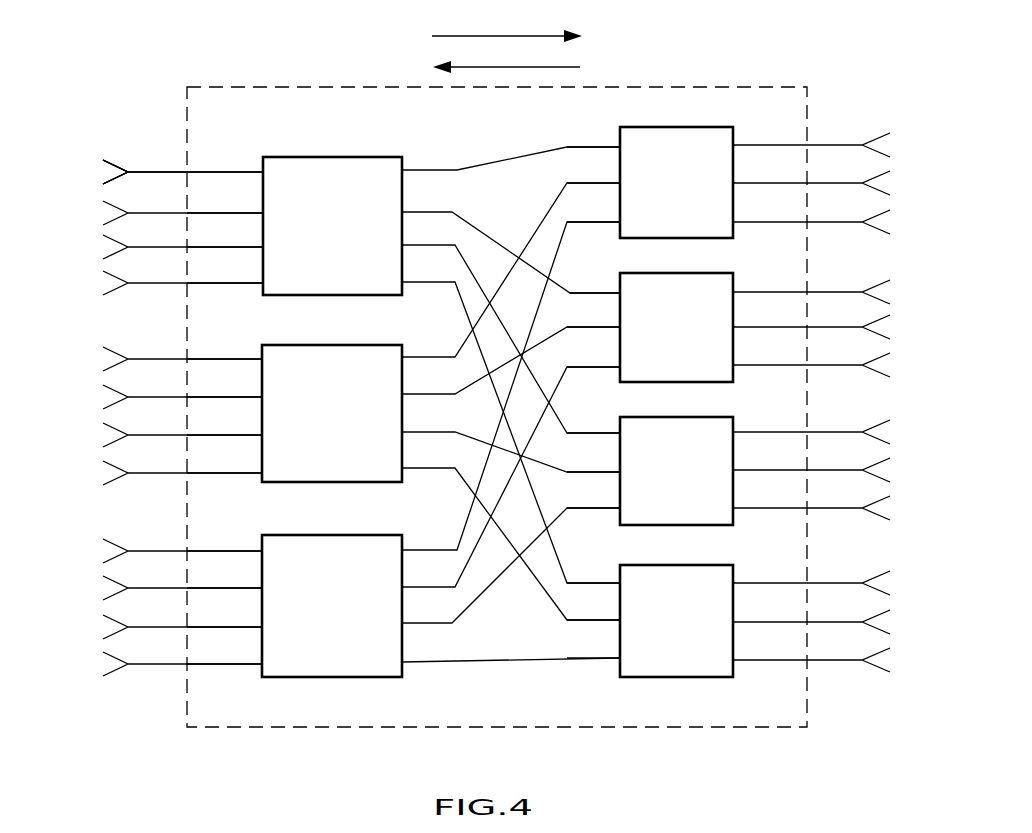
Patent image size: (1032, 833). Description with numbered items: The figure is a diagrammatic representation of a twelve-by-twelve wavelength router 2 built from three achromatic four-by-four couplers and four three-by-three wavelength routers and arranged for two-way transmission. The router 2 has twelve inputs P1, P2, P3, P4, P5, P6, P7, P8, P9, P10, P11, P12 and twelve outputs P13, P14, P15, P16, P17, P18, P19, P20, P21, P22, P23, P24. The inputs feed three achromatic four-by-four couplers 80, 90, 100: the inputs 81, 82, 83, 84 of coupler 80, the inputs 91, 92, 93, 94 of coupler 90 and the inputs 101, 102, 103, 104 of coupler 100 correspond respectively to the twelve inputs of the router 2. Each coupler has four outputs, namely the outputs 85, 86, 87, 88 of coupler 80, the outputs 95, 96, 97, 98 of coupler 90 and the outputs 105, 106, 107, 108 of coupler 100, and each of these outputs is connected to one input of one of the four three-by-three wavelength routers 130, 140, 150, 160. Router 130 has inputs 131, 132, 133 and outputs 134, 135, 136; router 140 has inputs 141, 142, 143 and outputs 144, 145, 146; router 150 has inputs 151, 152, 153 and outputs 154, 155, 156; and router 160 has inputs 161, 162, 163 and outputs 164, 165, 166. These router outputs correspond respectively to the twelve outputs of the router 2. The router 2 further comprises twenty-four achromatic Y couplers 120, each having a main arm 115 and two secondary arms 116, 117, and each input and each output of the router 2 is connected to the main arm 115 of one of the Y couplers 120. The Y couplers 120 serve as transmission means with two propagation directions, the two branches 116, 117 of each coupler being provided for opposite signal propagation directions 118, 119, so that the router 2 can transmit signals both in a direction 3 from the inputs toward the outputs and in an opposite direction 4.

The wavelength router 2 is at (670, 86).
The direction 3 is at (485, 32).
The opposite direction 4 is at (553, 64).
The achromatic 4×4 coupler 80 is at (297, 157).
The input of coupler 80 81 is at (236, 168).
The input of coupler 80 82 is at (236, 209).
The input of coupler 80 83 is at (236, 243).
The input of coupler 80 84 is at (236, 279).
The output of coupler 80 85 is at (417, 167).
The output of coupler 80 86 is at (417, 209).
The output of coupler 80 87 is at (417, 242).
The output of coupler 80 88 is at (417, 279).
The achromatic 4×4 coupler 90 is at (300, 345).
The input of coupler 90 91 is at (236, 356).
The input of coupler 90 92 is at (236, 394).
The input of coupler 90 93 is at (236, 432).
The input of coupler 90 94 is at (236, 470).
The output of coupler 90 95 is at (417, 354).
The output of coupler 90 96 is at (417, 391).
The output of coupler 90 97 is at (417, 429).
The output of coupler 90 98 is at (417, 465).
The achromatic 4×4 coupler 100 is at (313, 535).
The input of coupler 100 101 is at (243, 548).
The input of coupler 100 102 is at (243, 585).
The input of coupler 100 103 is at (243, 623).
The input of coupler 100 104 is at (243, 661).
The output of coupler 100 105 is at (408, 547).
The output of coupler 100 106 is at (408, 584).
The output of coupler 100 107 is at (408, 620).
The output of coupler 100 108 is at (408, 659).
The main arm 115 is at (146, 168).
The secondary arm 116 is at (116, 160).
The secondary arm 117 is at (92, 191).
The signal propagation direction 118 is at (106, 152).
The signal propagation direction 119 is at (105, 195).
The achromatic Y coupler 120 is at (93, 130).
The 3×3 wavelength router 130 is at (679, 127).
The input of router 130 131 is at (609, 144).
The input of router 130 132 is at (609, 180).
The input of router 130 133 is at (609, 219).
The output of router 130 134 is at (743, 142).
The output of router 130 135 is at (743, 180).
The output of router 130 136 is at (743, 219).
The 3×3 wavelength router 140 is at (679, 273).
The input of router 140 141 is at (609, 290).
The input of router 140 142 is at (609, 324).
The input of router 140 143 is at (609, 364).
The output of router 140 144 is at (743, 289).
The output of router 140 145 is at (743, 324).
The output of router 140 146 is at (743, 362).
The 3×3 wavelength router 150 is at (679, 417).
The input of router 150 151 is at (609, 430).
The input of router 150 152 is at (609, 469).
The input of router 150 153 is at (609, 505).
The output of router 150 154 is at (743, 429).
The output of router 150 155 is at (743, 467).
The output of router 150 156 is at (743, 505).
The 3×3 wavelength router 160 is at (679, 565).
The input of router 160 161 is at (609, 580).
The input of router 160 162 is at (609, 617).
The input of router 160 163 is at (609, 656).
The output of router 160 164 is at (743, 580).
The output of router 160 165 is at (743, 619).
The output of router 160 166 is at (743, 657).
The input P1 is at (170, 178).
The input P2 is at (170, 219).
The input P3 is at (170, 254).
The input P4 is at (170, 290).
The input P5 is at (170, 357).
The input P6 is at (170, 394).
The input P7 is at (170, 432).
The input P8 is at (170, 470).
The input P9 is at (170, 546).
The input P10 is at (134, 584).
The input P11 is at (134, 622).
The input P12 is at (134, 661).
The output P13 is at (820, 145).
The output P14 is at (822, 185).
The output P15 is at (826, 224).
The output P16 is at (826, 292).
The output P17 is at (862, 330).
The output P18 is at (862, 369).
The output P19 is at (838, 430).
The output P20 is at (862, 468).
The output P21 is at (862, 506).
The output P22 is at (842, 580).
The output P23 is at (862, 621).
The output P24 is at (862, 661).